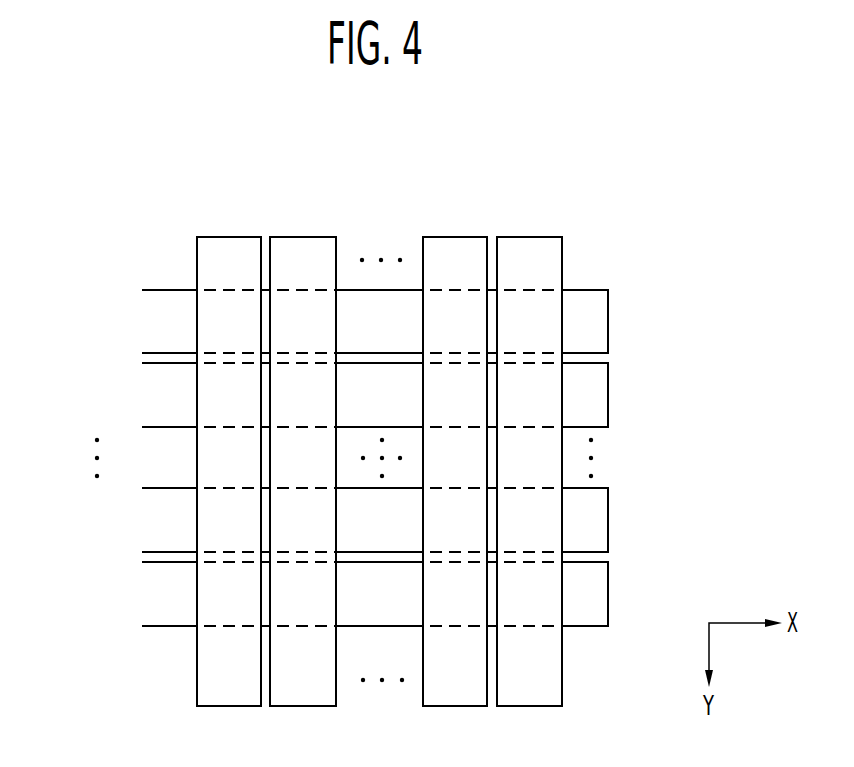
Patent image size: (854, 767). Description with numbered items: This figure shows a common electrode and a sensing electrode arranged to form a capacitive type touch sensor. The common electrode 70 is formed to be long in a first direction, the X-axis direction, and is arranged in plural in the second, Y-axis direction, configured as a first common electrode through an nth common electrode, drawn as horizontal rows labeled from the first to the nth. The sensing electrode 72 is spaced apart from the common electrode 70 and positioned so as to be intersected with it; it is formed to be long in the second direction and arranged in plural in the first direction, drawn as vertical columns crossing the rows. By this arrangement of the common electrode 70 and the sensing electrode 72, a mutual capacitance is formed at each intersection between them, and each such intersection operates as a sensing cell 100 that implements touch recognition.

The common electrode 70 is at (61, 300).
The sensing electrode 72 is at (543, 237).
The sensing cell 100 is at (332, 414).